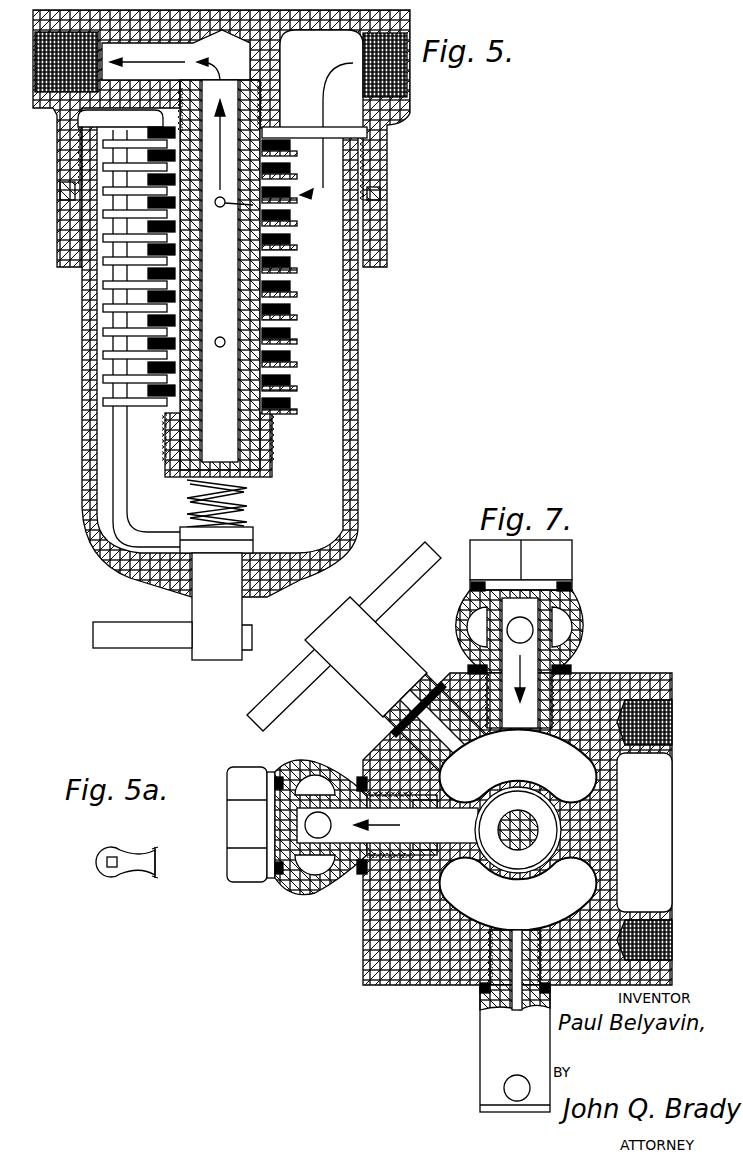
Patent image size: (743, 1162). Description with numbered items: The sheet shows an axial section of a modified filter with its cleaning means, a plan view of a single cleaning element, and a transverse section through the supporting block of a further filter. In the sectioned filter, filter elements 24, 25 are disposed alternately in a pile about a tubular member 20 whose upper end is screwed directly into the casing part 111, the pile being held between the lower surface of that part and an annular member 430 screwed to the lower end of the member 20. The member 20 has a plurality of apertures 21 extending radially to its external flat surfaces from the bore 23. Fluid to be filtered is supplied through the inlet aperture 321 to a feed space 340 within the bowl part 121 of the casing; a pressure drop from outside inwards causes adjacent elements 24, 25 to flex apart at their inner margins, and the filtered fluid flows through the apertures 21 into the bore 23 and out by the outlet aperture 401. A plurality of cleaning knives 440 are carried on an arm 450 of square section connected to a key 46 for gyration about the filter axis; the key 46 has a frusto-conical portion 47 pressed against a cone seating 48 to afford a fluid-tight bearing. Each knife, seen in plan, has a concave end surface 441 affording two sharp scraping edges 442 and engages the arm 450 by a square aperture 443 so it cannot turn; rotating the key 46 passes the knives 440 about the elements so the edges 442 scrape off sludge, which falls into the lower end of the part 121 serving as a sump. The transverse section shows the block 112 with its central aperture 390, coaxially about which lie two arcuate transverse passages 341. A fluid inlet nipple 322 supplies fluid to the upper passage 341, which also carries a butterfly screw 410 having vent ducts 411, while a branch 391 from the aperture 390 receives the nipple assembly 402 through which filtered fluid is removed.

In FIG. 5, the tubular member 20 is at (250, 285).
In FIG. 5, the apertures 21 is at (253, 205).
In FIG. 5, the bore 23 is at (153, 262).
In FIG. 5, the filter element 24 is at (297, 320).
In FIG. 5, the filter element 25 is at (297, 373).
In FIG. 5, the key 46 is at (210, 645).
In FIG. 5, the frusto-conical portion 47 is at (217, 560).
In FIG. 5, the cone seating 48 is at (148, 570).
In FIG. 5, the casing part 111 is at (321, 114).
In FIG. 7, the block 112 is at (588, 693).
In FIG. 5, the bowl part 121 is at (350, 450).
In FIG. 5, the inlet aperture 321 is at (393, 77).
In FIG. 7, the fluid inlet nipple 322 is at (583, 615).
In FIG. 5, the feed space 340 is at (320, 505).
In FIG. 7, the arcuate transverse passages 341 is at (567, 763).
In FIG. 7, the aperture 390 is at (548, 835).
In FIG. 7, the branch 391 is at (422, 960).
In FIG. 5, the outlet aperture 401 is at (62, 72).
In FIG. 7, the nipple assembly 402 is at (317, 867).
In FIG. 7, the butterfly screw 410 is at (368, 660).
In FIG. 7, the vent ducts 411 is at (418, 715).
In FIG. 5, the annular member 430 is at (167, 462).
In FIG. 5, the cleaning knife 440 is at (103, 375).
In FIG. 5A, the cleaning knife 440 is at (130, 865).
In FIG. 5A, the concave end surface 441 is at (157, 865).
In FIG. 5A, the scraping edges 442 is at (155, 848).
In FIG. 5A, the square aperture 443 is at (100, 870).
In FIG. 5, the arm 450 is at (120, 450).